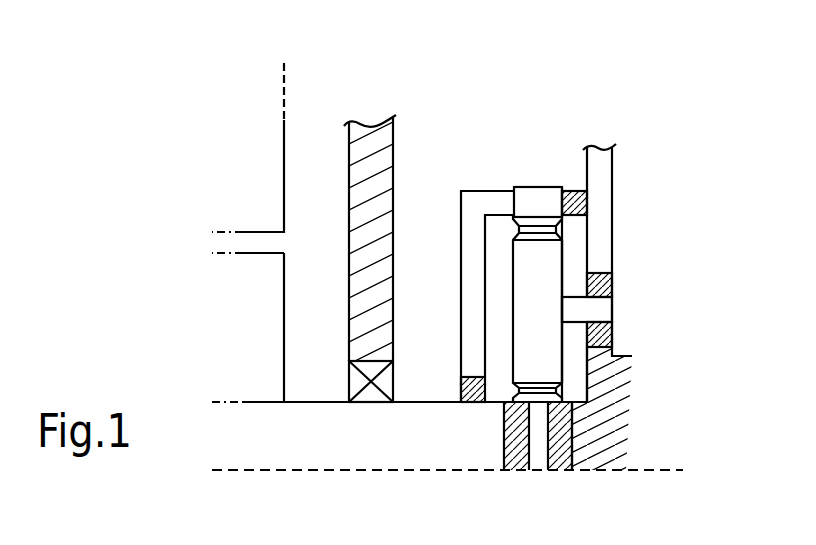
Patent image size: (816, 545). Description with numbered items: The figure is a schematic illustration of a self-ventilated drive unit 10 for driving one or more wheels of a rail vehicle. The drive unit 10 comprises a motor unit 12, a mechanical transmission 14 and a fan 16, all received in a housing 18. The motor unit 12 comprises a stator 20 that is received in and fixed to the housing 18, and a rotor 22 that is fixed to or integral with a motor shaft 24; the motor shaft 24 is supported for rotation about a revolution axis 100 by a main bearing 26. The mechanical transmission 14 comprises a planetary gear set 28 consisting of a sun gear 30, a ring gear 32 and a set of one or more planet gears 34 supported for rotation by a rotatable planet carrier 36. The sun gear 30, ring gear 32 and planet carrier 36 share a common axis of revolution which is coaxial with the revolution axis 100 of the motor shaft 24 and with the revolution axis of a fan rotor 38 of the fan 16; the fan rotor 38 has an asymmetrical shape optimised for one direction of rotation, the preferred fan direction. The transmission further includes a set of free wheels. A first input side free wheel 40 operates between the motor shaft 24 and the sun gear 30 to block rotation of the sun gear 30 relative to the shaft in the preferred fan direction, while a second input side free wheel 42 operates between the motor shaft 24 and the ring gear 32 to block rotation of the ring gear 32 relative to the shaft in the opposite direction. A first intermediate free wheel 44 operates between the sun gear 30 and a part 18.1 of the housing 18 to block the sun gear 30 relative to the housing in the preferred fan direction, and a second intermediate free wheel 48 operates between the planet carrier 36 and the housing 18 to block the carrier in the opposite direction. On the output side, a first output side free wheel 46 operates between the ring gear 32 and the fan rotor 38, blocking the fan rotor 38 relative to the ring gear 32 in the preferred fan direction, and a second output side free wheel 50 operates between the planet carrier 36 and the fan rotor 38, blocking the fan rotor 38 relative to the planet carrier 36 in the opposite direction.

The drive unit 10 is at (655, 145).
The motor unit 12 is at (322, 88).
The mechanical transmission 14 is at (522, 128).
The fan 16 is at (606, 127).
The housing 18 is at (359, 145).
The part of the housing 18.1 is at (604, 422).
The stator 20 is at (262, 162).
The rotor 22 is at (255, 305).
The motor shaft 24 is at (355, 450).
The main bearing 26 is at (362, 381).
The planetary gear set 28 is at (578, 251).
The sun gear 30 is at (565, 399).
The ring gear 32 is at (530, 200).
The planet gears 34 is at (564, 276).
The planet carrier 36 is at (600, 311).
The fan rotor 38 is at (605, 197).
The first input side free wheel 40 is at (510, 450).
The second input side free wheel 42 is at (465, 405).
The first intermediate free wheel 44 is at (563, 450).
The first output side free wheel 46 is at (579, 192).
The second intermediate free wheel 48 is at (603, 340).
The second output side free wheel 50 is at (608, 287).
The revolution axis 100 is at (381, 472).